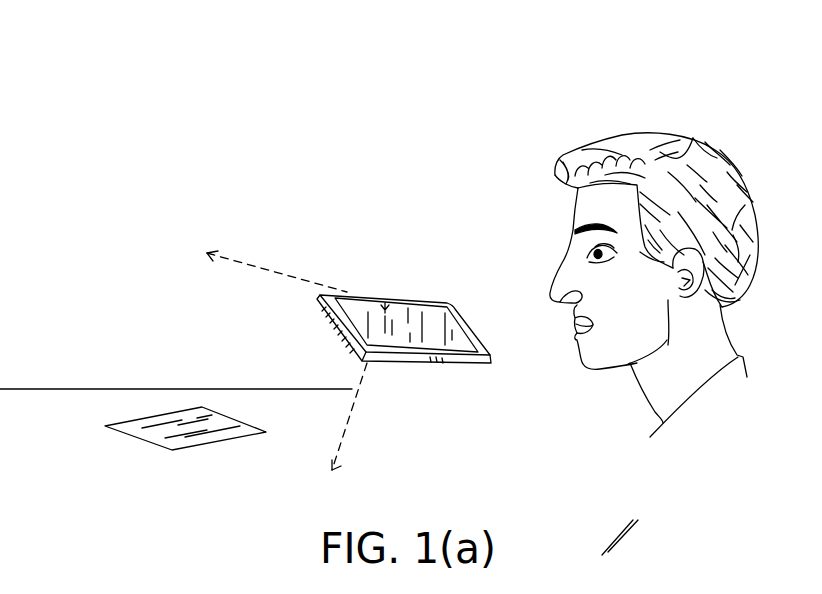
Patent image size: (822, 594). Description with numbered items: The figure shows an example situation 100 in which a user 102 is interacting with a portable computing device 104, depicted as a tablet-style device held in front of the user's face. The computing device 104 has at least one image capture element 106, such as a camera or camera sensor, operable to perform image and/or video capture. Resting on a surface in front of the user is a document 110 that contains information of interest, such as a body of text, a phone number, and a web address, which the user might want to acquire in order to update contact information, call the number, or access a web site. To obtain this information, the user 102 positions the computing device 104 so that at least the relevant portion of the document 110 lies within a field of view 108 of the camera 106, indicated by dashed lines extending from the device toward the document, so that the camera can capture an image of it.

The example situation 100 is at (62, 116).
The user 102 is at (510, 197).
The computing device 104 is at (408, 362).
The image capture element 106 is at (387, 292).
The field of view 108 is at (275, 270).
The document 110 is at (183, 410).